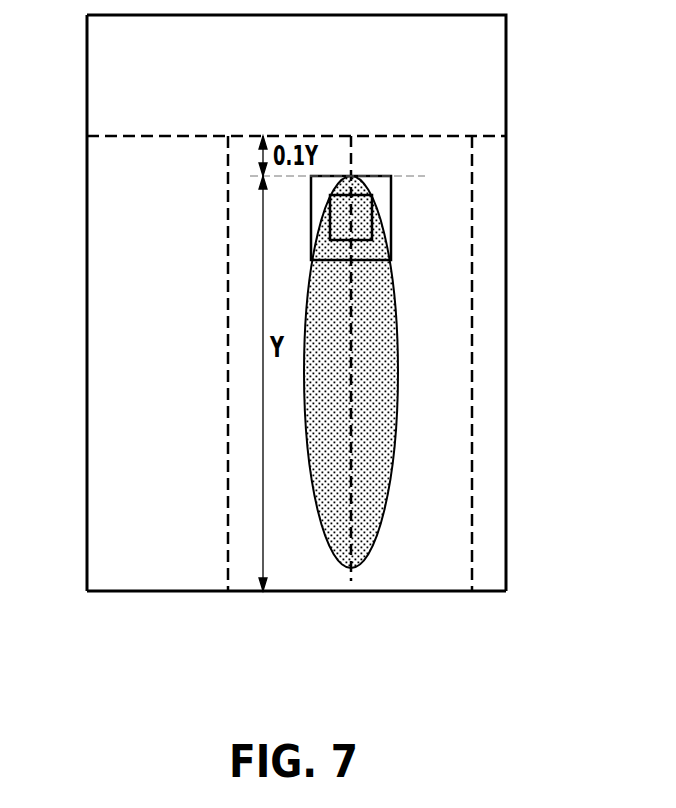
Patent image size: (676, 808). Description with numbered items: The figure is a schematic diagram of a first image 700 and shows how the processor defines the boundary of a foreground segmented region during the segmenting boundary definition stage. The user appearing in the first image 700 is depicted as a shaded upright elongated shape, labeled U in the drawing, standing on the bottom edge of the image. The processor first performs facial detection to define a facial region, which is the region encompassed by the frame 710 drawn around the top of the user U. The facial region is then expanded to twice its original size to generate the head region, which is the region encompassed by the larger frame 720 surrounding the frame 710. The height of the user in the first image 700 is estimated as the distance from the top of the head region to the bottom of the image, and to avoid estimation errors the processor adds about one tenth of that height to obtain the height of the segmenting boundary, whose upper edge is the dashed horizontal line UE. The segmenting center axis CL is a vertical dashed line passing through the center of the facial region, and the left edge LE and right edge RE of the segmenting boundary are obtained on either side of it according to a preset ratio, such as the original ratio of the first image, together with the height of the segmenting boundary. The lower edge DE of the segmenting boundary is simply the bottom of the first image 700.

The first image 700 is at (506, 73).
The frame 710 is at (372, 216).
The frame 720 is at (391, 237).
The unit pixel / light-emitting region U is at (387, 356).
The upper edge of the segmenting boundary UE is at (427, 133).
The left edge of the segmenting boundary LE is at (228, 458).
The right edge of the segmenting boundary RE is at (474, 521).
The lower edge of the segmenting boundary DE is at (447, 591).
The segmenting center axis CL is at (351, 462).